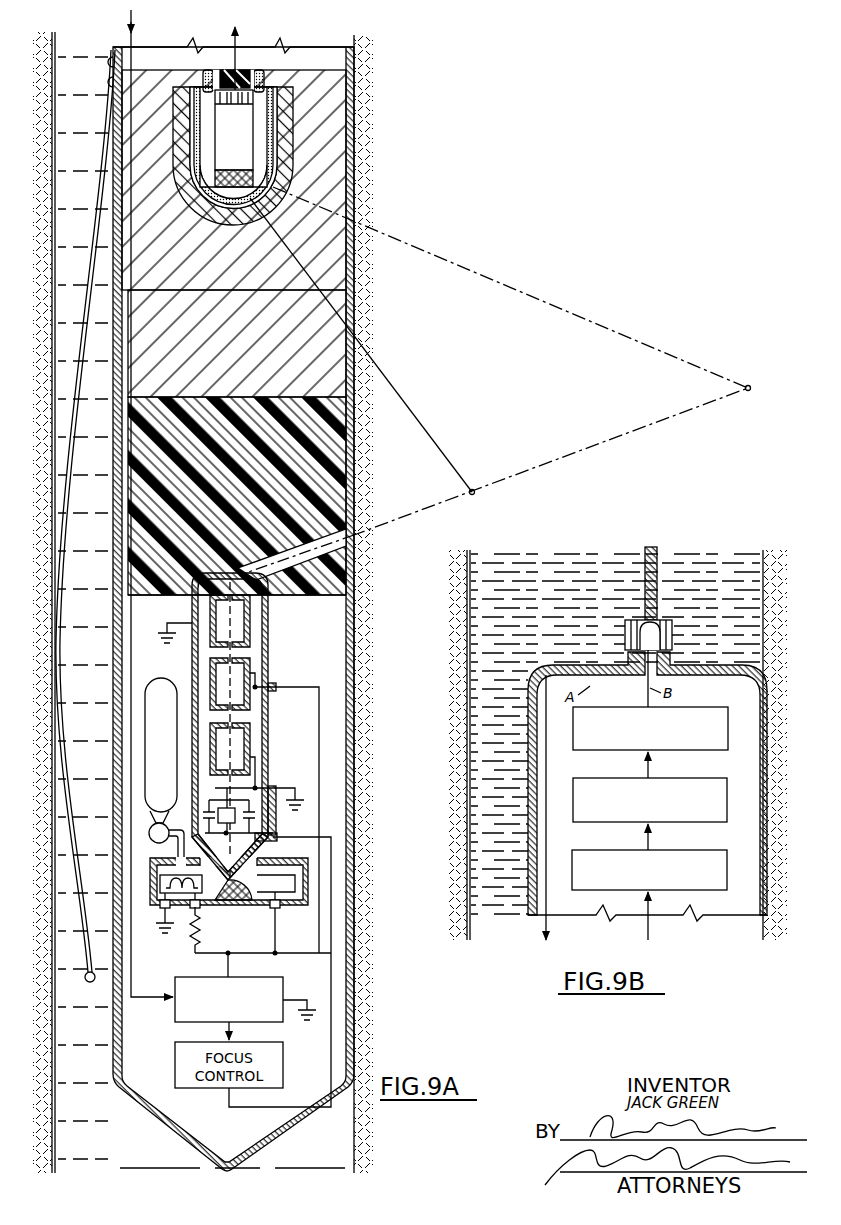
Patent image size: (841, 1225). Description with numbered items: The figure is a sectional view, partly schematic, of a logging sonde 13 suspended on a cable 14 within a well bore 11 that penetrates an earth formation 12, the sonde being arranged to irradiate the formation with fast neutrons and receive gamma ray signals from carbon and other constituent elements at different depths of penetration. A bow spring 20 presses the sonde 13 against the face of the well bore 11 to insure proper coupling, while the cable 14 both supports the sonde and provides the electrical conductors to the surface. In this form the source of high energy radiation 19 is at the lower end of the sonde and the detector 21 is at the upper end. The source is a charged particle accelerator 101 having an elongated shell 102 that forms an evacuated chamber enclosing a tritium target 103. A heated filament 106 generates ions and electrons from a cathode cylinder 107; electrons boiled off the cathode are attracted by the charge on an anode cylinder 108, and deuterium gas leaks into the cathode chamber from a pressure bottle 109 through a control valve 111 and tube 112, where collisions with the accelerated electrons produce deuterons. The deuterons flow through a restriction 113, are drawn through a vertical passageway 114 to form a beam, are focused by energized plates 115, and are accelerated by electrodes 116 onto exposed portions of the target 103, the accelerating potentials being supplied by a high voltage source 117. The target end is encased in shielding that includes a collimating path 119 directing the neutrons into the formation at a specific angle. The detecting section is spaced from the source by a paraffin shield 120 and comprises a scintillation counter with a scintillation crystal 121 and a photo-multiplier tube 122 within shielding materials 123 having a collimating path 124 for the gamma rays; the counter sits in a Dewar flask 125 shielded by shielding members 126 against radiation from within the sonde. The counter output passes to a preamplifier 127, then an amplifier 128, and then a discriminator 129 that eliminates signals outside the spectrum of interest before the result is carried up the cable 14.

In FIG. 9A, the well bore 11 is at (48, 1147).
In FIG. 9B, the well bore 11 is at (468, 607).
In FIG. 9A, the earth formation 12 is at (396, 309).
In FIG. 9B, the earth formation 12 is at (445, 746).
In FIG. 9A, the logging sonde 13 is at (110, 528).
In FIG. 9B, the logging sonde 13 is at (528, 852).
In FIG. 9B, the cable 14 is at (644, 585).
In FIG. 9A, the source of high energy radiation 19 is at (108, 1020).
In FIG. 9A, the bow spring 20 is at (68, 797).
In FIG. 9A, the detector 21 is at (108, 250).
In FIG. 9A, the charged particle accelerator 101 is at (188, 668).
In FIG. 9A, the elongated shell 102 is at (268, 622).
In FIG. 9A, the tritium target 103 is at (212, 572).
In FIG. 9A, the heated filament 106 is at (187, 890).
In FIG. 9A, the cathode cylinder 107 is at (163, 890).
In FIG. 9A, the anode cylinder 108 is at (283, 873).
In FIG. 9A, the pressure bottle 109 is at (143, 727).
In FIG. 9A, the control valve 111 is at (148, 831).
In FIG. 9A, the tube 112 is at (176, 857).
In FIG. 9A, the restriction 113 is at (256, 902).
In FIG. 9A, the vertical passageway 114 is at (215, 907).
In FIG. 9A, the plates 115 is at (224, 810).
In FIG. 9A, the electrodes 116 is at (250, 673).
In FIG. 9A, the high voltage source 117 is at (183, 1022).
In FIG. 9A, the collimating path 119 is at (312, 536).
In FIG. 9A, the paraffin shield 120 is at (247, 491).
In FIG. 9A, the scintillation crystal 121 is at (210, 222).
In FIG. 9A, the photo-multiplier tube 122 is at (247, 125).
In FIG. 9A, the shielding materials 123 is at (247, 320).
In FIG. 9A, the collimating path 124 is at (333, 259).
In FIG. 9A, the Dewar flask 125 is at (197, 127).
In FIG. 9A, the shielding members 126 is at (293, 143).
In FIG. 9B, the preamplifier 127 is at (688, 850).
In FIG. 9B, the amplifier 128 is at (688, 778).
In FIG. 9B, the discriminator 129 is at (688, 707).